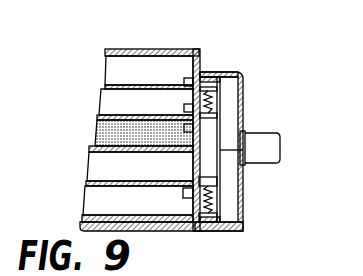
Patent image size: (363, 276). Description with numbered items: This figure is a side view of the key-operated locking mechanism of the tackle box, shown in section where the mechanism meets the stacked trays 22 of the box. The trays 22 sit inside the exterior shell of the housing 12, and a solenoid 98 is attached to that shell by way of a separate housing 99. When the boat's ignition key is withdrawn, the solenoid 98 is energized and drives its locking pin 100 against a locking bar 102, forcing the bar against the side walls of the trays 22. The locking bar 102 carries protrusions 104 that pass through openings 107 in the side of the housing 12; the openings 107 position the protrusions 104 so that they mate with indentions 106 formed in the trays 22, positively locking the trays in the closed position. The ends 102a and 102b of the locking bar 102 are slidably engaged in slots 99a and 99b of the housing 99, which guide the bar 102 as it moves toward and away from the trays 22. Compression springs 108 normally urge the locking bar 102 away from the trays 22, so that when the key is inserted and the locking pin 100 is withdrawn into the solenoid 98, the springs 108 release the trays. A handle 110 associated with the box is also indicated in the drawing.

The housing 12 is at (120, 49).
The trays 22 is at (108, 101).
The handle 110 is at (123, 137).
The indentions 106 is at (182, 112).
The housing 99 is at (245, 183).
The slot 99a is at (212, 72).
The slot 99b is at (212, 231).
The locking bar 102 is at (220, 133).
The end of locking bar 102a is at (211, 79).
The end of locking bar 102b is at (231, 231).
The compression springs 108 is at (207, 100).
The protrusions 104 is at (210, 213).
The locking pin 100 is at (245, 137).
The solenoid 98 is at (272, 152).
The openings 107 is at (190, 194).